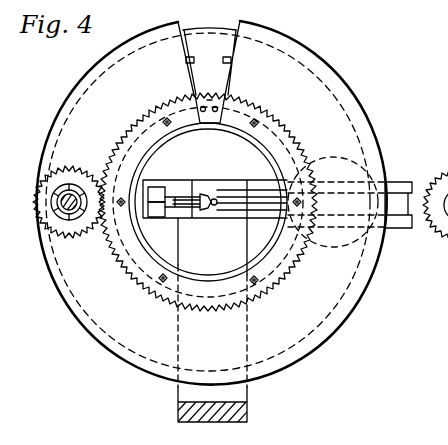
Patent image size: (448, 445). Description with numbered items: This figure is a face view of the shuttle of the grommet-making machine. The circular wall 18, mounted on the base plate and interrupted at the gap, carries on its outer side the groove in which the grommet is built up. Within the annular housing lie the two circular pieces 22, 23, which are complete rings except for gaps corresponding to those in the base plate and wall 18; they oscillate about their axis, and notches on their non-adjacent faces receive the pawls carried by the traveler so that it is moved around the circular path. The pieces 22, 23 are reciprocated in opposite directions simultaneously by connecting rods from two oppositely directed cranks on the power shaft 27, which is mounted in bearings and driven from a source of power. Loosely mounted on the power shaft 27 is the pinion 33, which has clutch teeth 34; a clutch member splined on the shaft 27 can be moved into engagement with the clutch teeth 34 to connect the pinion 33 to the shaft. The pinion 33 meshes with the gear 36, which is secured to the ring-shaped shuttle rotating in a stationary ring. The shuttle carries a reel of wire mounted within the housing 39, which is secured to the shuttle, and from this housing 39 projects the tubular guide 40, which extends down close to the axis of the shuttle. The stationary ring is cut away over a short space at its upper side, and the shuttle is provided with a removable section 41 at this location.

The wall 18 is at (218, 212).
The circular piece 22 is at (163, 190).
The circular piece 23 is at (160, 214).
The power shaft 27 is at (76, 187).
The pinion 33 is at (82, 233).
The clutch teeth 34 is at (84, 190).
The gear 36 is at (129, 272).
The housing 39 is at (333, 249).
The tubular guide 40 is at (245, 198).
The removable section 41 is at (209, 72).